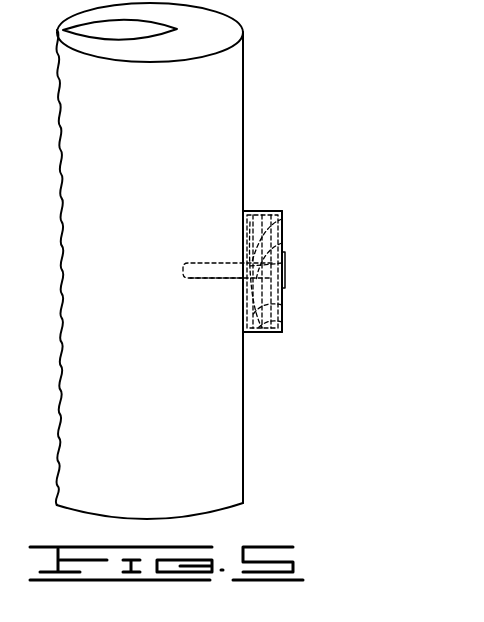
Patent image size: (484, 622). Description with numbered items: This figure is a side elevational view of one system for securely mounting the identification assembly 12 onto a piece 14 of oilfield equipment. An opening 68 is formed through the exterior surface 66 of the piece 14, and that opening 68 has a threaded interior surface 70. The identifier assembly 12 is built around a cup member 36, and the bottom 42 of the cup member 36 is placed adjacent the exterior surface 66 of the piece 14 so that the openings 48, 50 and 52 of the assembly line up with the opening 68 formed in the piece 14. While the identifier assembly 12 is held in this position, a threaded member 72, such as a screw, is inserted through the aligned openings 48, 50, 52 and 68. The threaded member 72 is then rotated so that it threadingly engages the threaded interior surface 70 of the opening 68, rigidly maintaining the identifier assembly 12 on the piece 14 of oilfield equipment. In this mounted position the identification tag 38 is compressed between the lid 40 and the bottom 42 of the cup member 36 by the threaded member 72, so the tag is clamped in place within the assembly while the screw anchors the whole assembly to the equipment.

The identifier assembly 12 is at (255, 196).
The piece of oilfield equipment 14 is at (247, 84).
The cup member 36 is at (281, 209).
The identification tag 38 is at (282, 322).
The lid 40 is at (282, 305).
The bottom 42 is at (255, 334).
The opening 48 is at (282, 219).
The opening 50 is at (282, 243).
The opening 52 is at (282, 263).
The exterior surface 66 is at (244, 437).
The opening 68 is at (188, 262).
The threaded interior surface 70 is at (205, 279).
The threaded member 72 is at (286, 279).